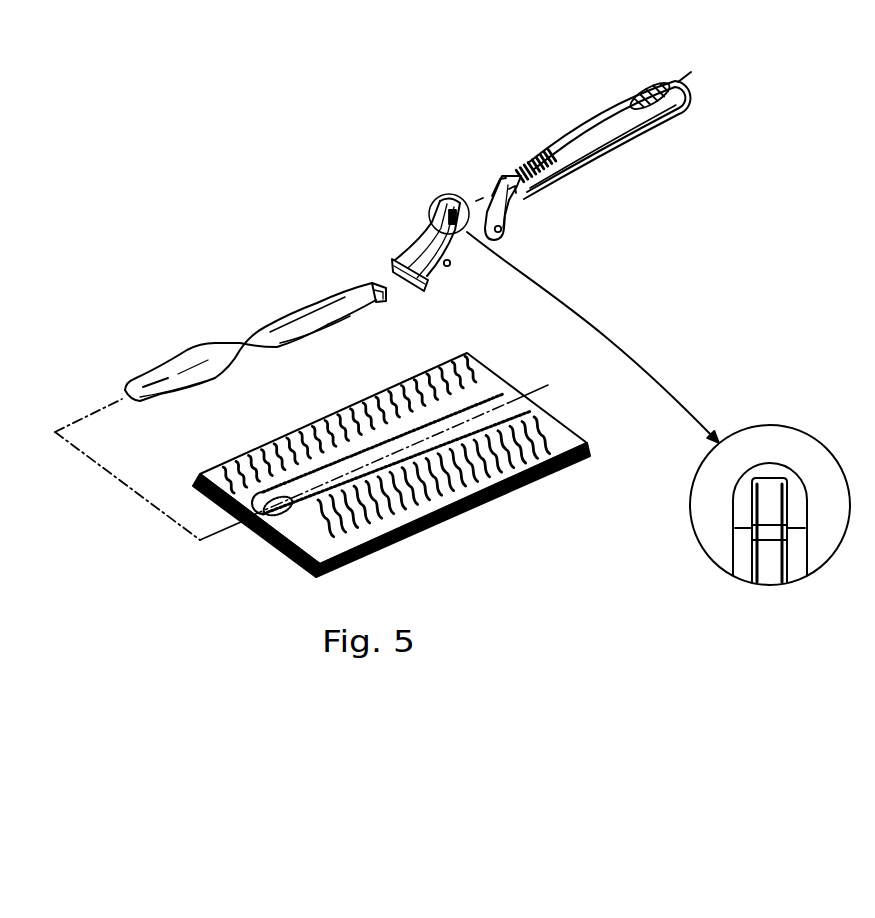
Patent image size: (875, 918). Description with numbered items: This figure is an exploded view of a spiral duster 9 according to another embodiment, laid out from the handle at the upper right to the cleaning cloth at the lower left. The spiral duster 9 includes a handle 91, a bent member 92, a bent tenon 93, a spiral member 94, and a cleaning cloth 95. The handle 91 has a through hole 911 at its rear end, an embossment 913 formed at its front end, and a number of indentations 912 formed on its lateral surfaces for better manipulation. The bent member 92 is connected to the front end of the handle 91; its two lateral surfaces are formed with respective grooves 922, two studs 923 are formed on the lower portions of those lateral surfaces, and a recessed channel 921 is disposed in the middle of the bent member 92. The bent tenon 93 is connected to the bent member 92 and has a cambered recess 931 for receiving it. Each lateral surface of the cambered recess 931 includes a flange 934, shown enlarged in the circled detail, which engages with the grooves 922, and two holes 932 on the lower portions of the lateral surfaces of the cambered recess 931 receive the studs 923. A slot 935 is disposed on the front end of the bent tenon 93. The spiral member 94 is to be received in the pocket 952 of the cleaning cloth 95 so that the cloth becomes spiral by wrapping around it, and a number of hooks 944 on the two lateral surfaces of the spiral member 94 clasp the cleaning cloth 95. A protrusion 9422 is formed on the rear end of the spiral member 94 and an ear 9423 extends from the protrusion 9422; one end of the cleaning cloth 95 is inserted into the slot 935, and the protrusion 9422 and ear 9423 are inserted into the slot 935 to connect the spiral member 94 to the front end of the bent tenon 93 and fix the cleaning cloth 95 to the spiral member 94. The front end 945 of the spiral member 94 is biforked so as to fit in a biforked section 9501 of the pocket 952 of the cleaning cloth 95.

The spiral duster 9 is at (305, 142).
The handle 91 is at (597, 118).
The through hole 911 is at (648, 88).
The indentations 912 is at (584, 163).
The embossment 913 is at (528, 158).
The bent member 92 is at (503, 176).
The recessed channel 921 is at (493, 195).
The grooves 922 is at (514, 193).
The studs 923 is at (508, 228).
The bent tenon 93 is at (448, 199).
The cambered recess 931 is at (430, 224).
The holes 932 is at (452, 268).
The flange 934 is at (452, 224).
The slot 935 is at (420, 288).
The spiral member 94 is at (273, 313).
The protrusion 9422 is at (360, 285).
The ear 9423 is at (378, 290).
The hooks 944 is at (278, 350).
The front end 945 is at (128, 380).
The cleaning cloth 95 is at (500, 380).
The biforked section 9501 is at (280, 518).
The pocket 952 is at (478, 427).